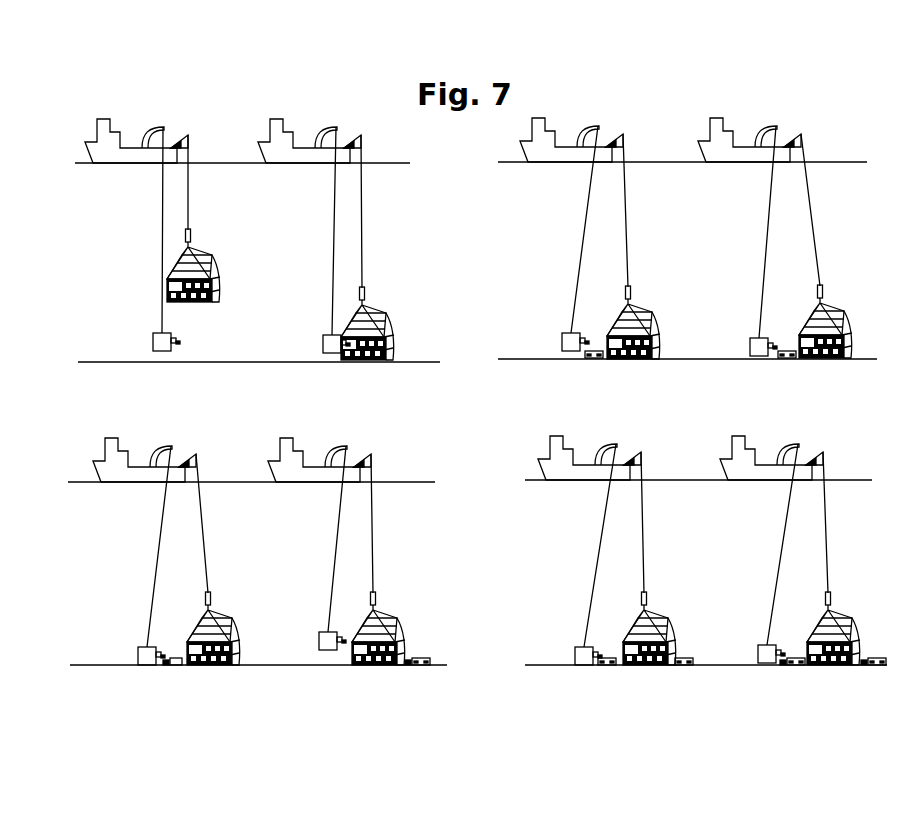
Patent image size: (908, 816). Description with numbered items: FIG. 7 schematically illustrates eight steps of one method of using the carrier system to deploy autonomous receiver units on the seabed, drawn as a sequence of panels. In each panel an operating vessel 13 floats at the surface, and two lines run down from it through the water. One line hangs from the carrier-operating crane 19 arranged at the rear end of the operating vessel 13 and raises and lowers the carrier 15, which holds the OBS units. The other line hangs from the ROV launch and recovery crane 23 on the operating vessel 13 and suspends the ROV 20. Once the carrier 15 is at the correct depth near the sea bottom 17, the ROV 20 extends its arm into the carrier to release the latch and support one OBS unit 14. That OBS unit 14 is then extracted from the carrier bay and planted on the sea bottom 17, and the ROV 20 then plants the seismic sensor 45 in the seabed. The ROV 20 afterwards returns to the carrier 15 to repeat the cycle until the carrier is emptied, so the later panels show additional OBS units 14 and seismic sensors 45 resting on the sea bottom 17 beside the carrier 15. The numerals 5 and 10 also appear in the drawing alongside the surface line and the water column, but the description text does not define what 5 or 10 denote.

The sea surface 5 is at (465, 319).
The water column 10 is at (65, 270).
The operating vessel 13 is at (117, 119).
The OBS unit 14 is at (597, 353).
The carrier 15 is at (863, 605).
The sea bottom 17 is at (218, 360).
The carrier-operating crane 19 is at (179, 142).
The ROV 20 is at (153, 340).
The ROV launch and recovery crane 23 is at (149, 140).
The seismic sensor 45 is at (173, 668).